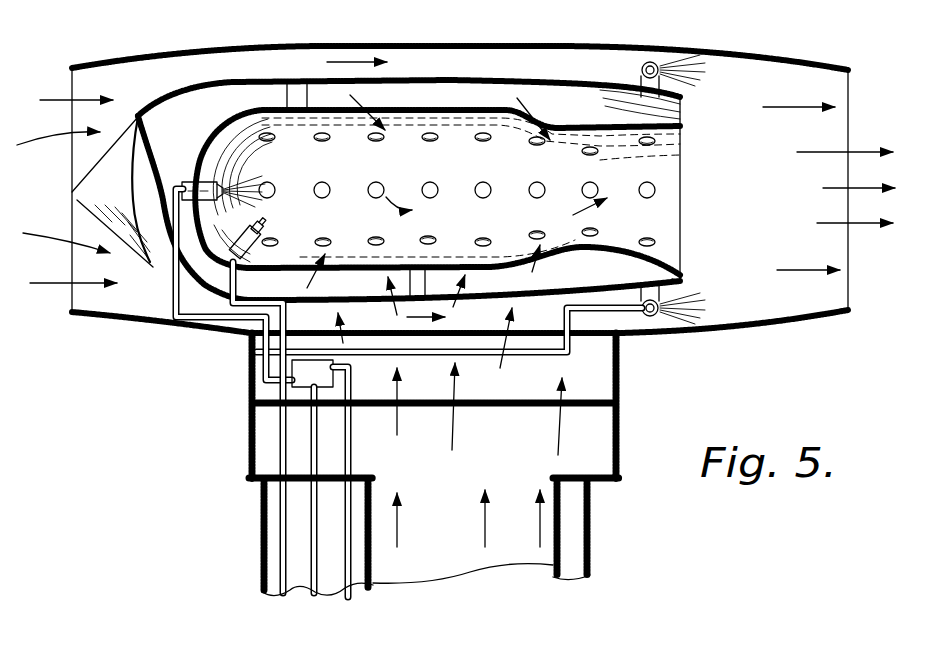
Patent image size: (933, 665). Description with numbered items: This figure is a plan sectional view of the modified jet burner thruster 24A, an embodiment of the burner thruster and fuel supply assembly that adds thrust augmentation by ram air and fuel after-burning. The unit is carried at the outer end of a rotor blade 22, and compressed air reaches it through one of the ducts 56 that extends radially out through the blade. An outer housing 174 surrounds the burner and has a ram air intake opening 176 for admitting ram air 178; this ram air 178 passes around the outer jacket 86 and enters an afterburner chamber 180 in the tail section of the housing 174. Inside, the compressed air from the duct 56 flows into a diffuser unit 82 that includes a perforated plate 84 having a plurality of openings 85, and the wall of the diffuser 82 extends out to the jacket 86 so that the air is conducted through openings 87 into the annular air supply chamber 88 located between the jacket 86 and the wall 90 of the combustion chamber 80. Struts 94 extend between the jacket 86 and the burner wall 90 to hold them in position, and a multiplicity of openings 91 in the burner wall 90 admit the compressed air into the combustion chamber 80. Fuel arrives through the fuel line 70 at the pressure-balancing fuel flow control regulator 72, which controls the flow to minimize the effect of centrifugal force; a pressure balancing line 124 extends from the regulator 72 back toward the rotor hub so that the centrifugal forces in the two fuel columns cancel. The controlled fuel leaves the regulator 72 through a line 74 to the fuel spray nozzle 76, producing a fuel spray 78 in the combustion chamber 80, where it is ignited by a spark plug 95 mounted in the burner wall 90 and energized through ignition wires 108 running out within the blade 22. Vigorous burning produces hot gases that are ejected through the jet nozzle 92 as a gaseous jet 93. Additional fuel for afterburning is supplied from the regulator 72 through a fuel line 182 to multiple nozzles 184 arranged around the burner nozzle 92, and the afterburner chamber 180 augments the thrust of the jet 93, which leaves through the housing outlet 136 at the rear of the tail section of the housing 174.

The ram air intake opening 176 is at (72, 80).
The ram air 178 is at (55, 143).
The outer housing 174 is at (428, 47).
The modified jet burner thruster 24A is at (535, 30).
The nozzles 184 is at (655, 61).
The outlet 136 is at (850, 72).
The struts 94 is at (287, 100).
The outer jacket 86 is at (181, 94).
The annular air supply chamber 88 is at (460, 107).
The fuel spray nozzle 76 is at (182, 182).
The fuel spray 78 is at (294, 183).
The combustion chamber 80 is at (360, 189).
The openings 91 is at (427, 262).
The afterburner chamber 180 is at (780, 188).
The gaseous jet 93 is at (868, 225).
The spark plug 95 is at (247, 237).
The wall of the combustion chamber 90 is at (348, 279).
The jet nozzle 92 is at (672, 278).
The line 74 is at (174, 306).
The openings 87 is at (453, 332).
The pressure-balancing fuel flow control regulator 72 is at (330, 395).
The fuel line 182 is at (522, 348).
The diffuser unit 82 is at (620, 428).
The perforated plate 84 is at (400, 410).
The openings 85 is at (455, 408).
The ignition wires 108 is at (282, 527).
The fuel line 70 is at (317, 567).
The pressure balancing line 124 is at (345, 597).
The ducts 56 is at (547, 563).
The blade 22 is at (590, 543).